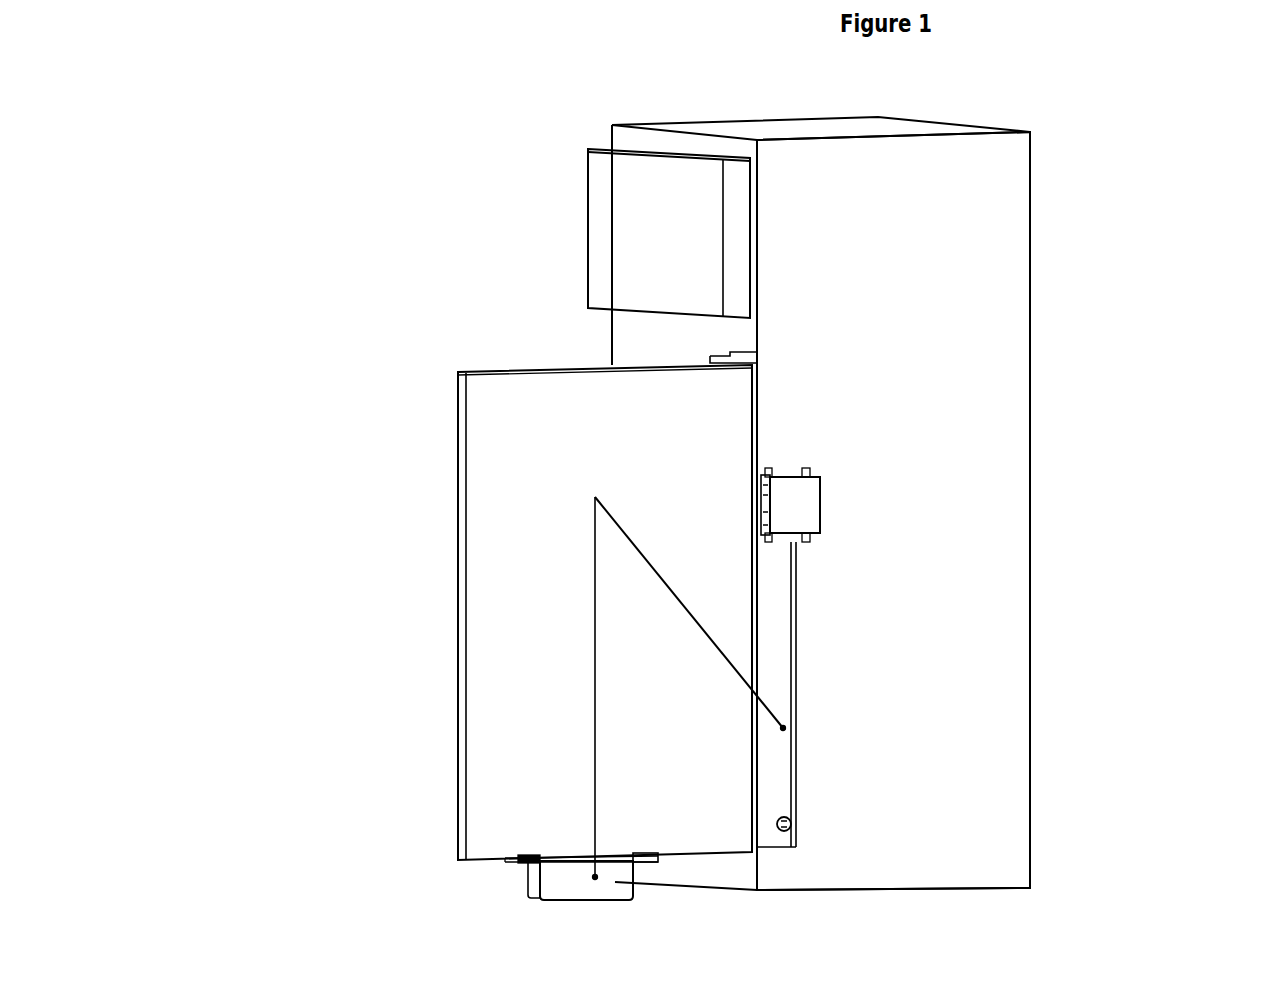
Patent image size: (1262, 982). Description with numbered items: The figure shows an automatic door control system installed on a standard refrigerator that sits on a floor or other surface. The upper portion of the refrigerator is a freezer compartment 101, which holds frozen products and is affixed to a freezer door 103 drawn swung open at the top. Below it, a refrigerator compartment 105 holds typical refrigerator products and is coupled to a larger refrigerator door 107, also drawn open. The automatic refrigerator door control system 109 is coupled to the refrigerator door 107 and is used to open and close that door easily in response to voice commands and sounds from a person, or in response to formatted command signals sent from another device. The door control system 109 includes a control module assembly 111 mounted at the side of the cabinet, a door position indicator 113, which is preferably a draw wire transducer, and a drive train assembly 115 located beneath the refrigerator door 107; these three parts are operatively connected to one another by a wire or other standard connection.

The freezer compartment 101 is at (920, 266).
The freezer door 103 is at (586, 208).
The refrigerator compartment 105 is at (905, 642).
The refrigerator door 107 is at (456, 660).
The automatic refrigerator door control system 109 is at (768, 497).
The control module assembly 111 is at (821, 508).
The door position indicator 113 is at (740, 822).
The drive train assembly 115 is at (527, 888).